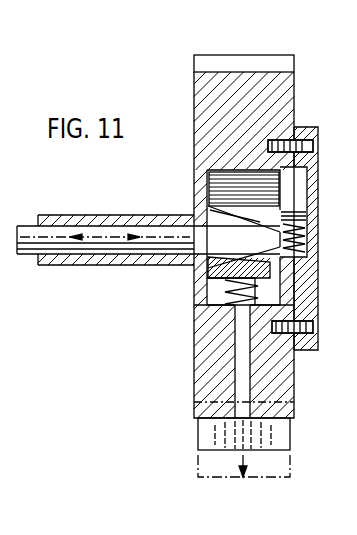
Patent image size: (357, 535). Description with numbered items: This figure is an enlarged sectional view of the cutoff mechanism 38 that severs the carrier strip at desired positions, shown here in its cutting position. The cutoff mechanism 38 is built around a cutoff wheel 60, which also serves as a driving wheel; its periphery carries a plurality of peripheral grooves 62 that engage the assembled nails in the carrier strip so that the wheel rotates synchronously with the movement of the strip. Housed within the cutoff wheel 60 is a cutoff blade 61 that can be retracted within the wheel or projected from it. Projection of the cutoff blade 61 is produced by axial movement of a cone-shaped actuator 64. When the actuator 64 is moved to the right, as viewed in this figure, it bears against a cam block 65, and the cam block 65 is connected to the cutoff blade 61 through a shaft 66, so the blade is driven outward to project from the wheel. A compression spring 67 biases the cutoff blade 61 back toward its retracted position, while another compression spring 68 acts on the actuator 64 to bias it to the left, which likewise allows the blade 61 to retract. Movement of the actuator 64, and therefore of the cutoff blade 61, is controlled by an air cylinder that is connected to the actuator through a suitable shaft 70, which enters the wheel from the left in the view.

The cutoff mechanism 38 is at (99, 328).
The cutoff wheel 60 is at (190, 95).
The cutoff blade 61 is at (212, 434).
The peripheral grooves 62 is at (196, 62).
The cone-shaped actuator 64 is at (195, 203).
The cam block 65 is at (212, 278).
The shaft 66 is at (215, 369).
The compression spring 67 is at (208, 300).
The compression spring 68 is at (291, 210).
The shaft 70 is at (113, 226).